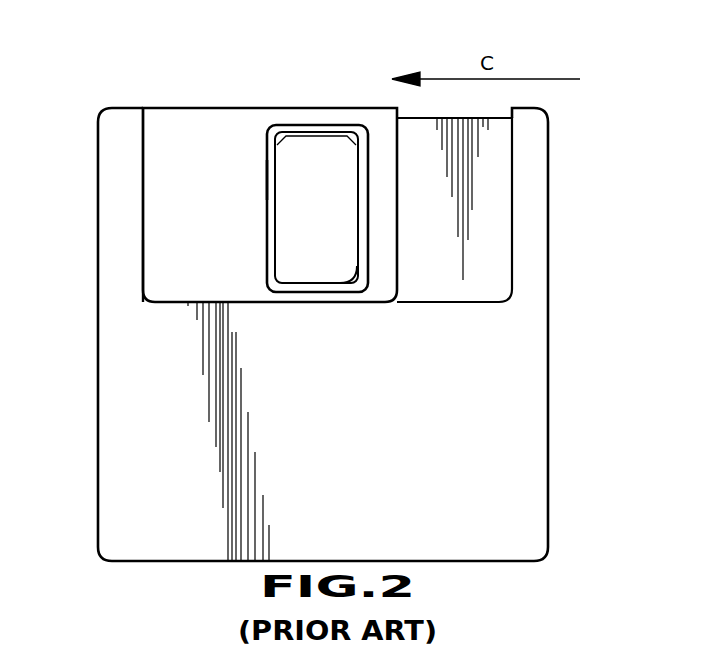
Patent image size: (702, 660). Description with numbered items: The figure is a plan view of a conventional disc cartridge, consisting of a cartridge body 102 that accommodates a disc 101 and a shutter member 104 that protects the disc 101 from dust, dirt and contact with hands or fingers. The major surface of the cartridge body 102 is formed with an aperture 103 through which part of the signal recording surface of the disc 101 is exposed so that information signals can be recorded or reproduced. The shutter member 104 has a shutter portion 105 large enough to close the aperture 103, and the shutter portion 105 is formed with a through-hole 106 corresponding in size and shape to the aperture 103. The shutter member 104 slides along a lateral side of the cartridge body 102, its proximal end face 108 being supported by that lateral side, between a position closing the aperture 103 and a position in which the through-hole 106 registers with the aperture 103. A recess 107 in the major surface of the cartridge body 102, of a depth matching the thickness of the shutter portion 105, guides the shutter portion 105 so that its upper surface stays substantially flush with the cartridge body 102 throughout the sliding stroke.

The disc 101 is at (303, 148).
The cartridge body 102 is at (98, 478).
The aperture 103 is at (352, 264).
The shutter member 104 is at (170, 107).
The shutter portion 105 is at (157, 190).
The through-hole 106 is at (272, 180).
The recess 107 is at (146, 252).
The proximal end face 108 is at (337, 113).